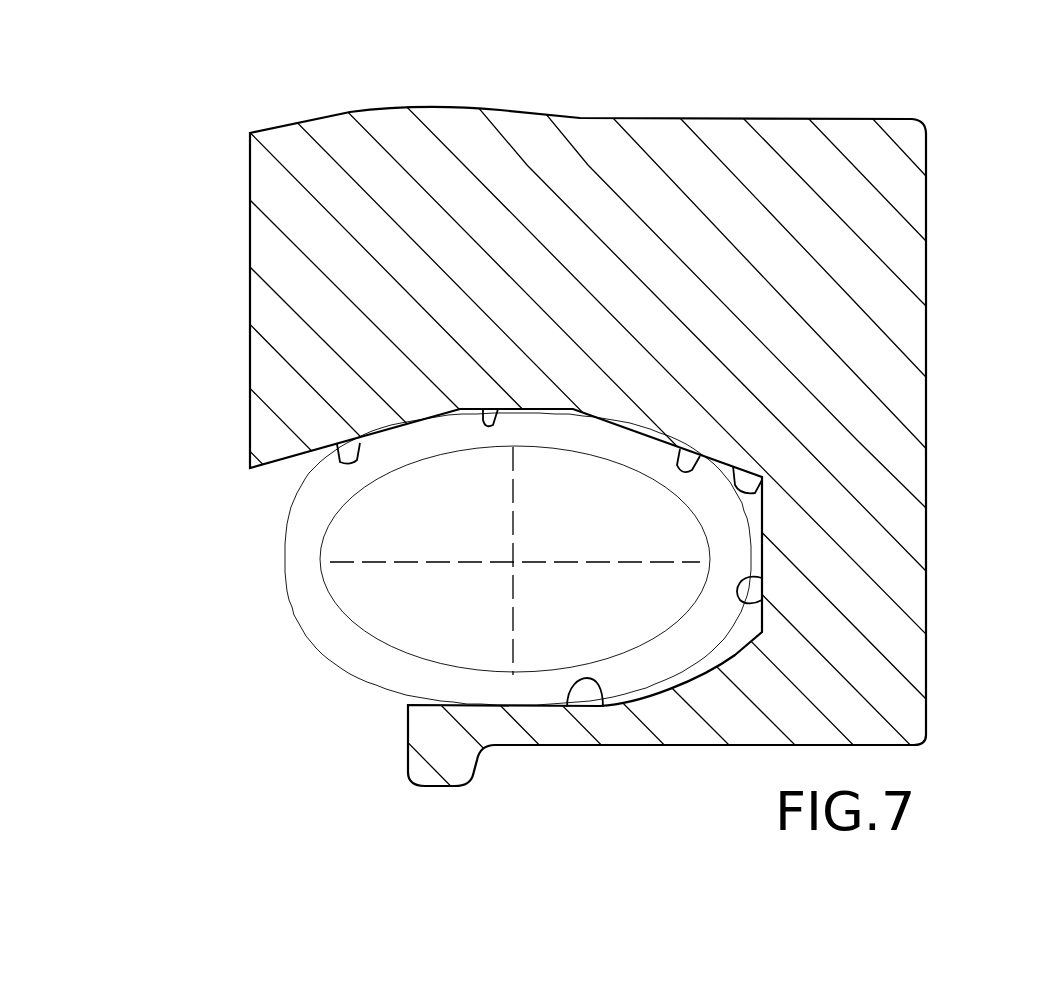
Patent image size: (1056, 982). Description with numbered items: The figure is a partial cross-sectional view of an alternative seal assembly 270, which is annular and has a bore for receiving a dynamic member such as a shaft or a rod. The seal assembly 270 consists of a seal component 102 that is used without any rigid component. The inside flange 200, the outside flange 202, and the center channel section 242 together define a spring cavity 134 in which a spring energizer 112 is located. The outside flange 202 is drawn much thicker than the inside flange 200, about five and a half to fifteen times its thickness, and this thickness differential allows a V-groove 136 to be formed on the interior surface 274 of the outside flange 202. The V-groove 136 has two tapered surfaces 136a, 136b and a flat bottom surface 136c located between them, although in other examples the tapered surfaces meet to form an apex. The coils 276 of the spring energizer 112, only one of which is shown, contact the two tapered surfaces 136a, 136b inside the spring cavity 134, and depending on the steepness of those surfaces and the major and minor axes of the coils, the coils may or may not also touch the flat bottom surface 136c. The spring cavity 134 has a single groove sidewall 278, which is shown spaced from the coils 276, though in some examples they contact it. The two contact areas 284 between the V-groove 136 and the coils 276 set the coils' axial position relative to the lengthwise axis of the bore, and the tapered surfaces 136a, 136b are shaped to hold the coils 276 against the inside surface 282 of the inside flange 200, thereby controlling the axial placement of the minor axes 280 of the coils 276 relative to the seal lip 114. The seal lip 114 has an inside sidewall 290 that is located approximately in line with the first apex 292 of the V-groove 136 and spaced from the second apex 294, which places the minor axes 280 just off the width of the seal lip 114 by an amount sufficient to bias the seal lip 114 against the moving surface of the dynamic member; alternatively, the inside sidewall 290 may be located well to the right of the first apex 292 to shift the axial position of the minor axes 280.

The seal component 102 is at (778, 158).
The spring energizer 112 is at (303, 629).
The seal lip 114 is at (433, 757).
The spring cavity 134 is at (370, 598).
The V-groove 136 is at (357, 443).
The tapered surface 136a is at (310, 458).
The tapered surface 136b is at (765, 490).
The flat bottom surface 136c is at (483, 409).
The inside flange 200 is at (630, 723).
The outside flange 202 is at (320, 208).
The center channel section 242 is at (882, 563).
The seal assembly 270 is at (320, 96).
The interior surface 274 is at (707, 460).
The coils 276 is at (307, 520).
The groove sidewall 278 is at (762, 607).
The minor axes 280 is at (505, 598).
The inside surface 282 is at (570, 707).
The contact areas 284 is at (417, 423).
The inside sidewall 290 is at (477, 762).
The first apex 292 is at (440, 415).
The second apex 294 is at (573, 409).